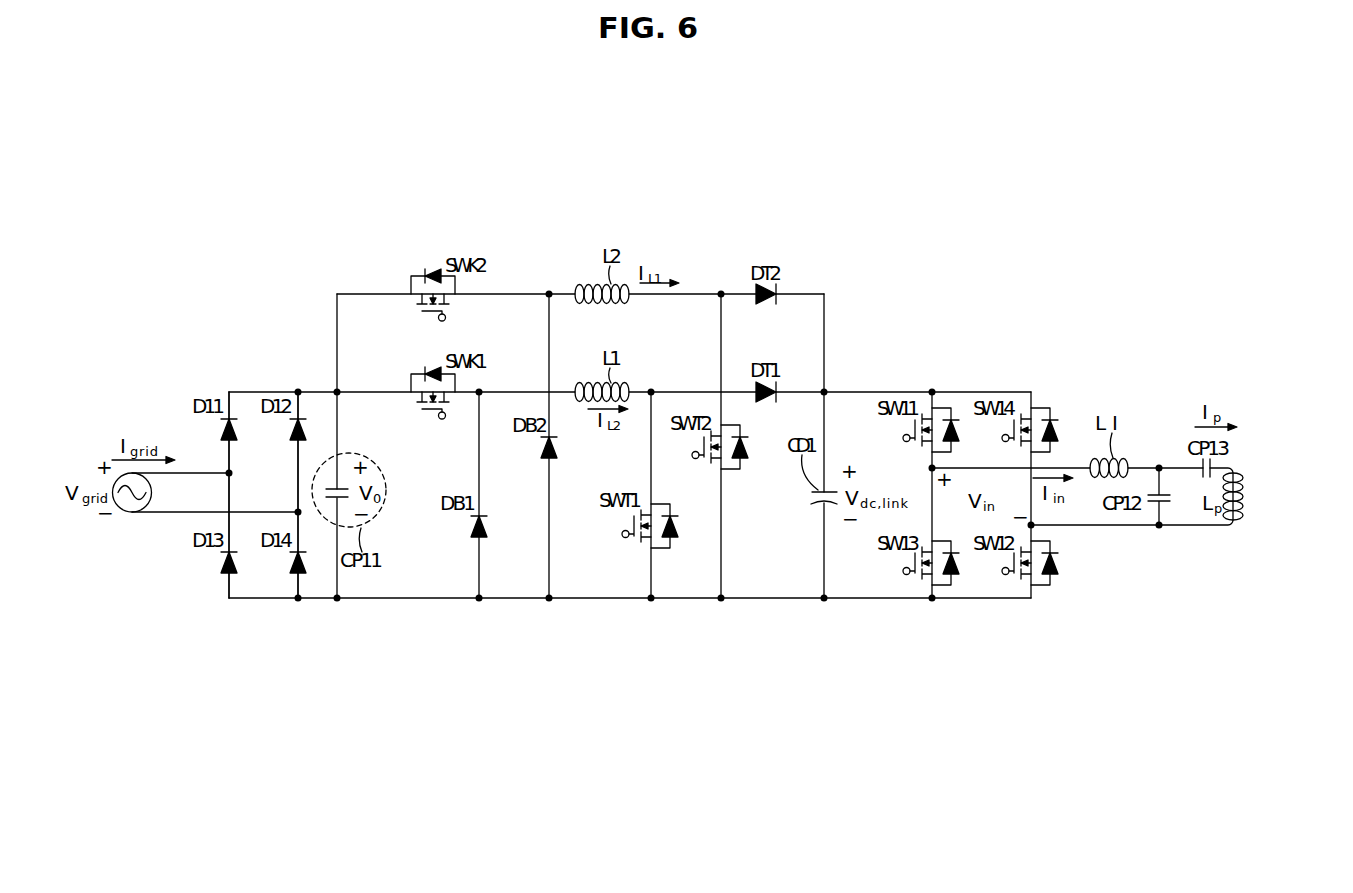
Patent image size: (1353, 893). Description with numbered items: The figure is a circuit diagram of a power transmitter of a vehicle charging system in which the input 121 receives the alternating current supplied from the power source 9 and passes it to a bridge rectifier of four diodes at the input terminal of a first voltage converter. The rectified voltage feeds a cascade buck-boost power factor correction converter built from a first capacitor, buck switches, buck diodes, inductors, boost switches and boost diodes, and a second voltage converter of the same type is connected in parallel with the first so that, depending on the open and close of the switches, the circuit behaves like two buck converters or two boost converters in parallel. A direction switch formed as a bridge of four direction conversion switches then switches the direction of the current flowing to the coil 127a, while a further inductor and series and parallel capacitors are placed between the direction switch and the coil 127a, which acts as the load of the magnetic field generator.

The power source 9 is at (122, 513).
The input 121 is at (172, 522).
The coil 127a is at (1243, 505).